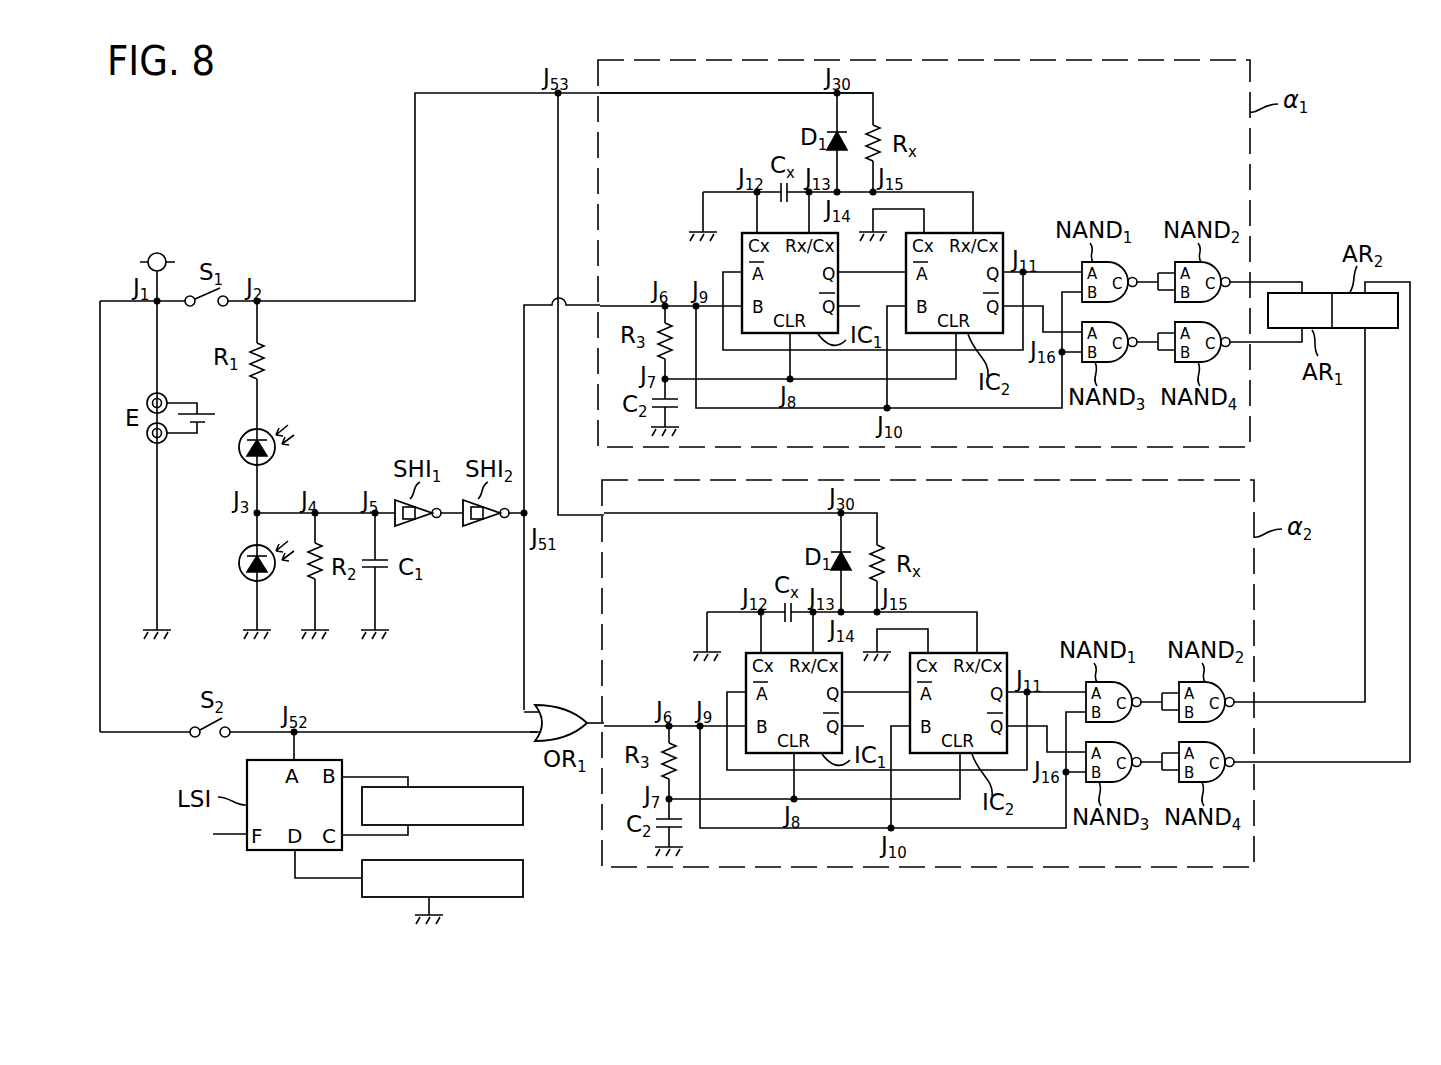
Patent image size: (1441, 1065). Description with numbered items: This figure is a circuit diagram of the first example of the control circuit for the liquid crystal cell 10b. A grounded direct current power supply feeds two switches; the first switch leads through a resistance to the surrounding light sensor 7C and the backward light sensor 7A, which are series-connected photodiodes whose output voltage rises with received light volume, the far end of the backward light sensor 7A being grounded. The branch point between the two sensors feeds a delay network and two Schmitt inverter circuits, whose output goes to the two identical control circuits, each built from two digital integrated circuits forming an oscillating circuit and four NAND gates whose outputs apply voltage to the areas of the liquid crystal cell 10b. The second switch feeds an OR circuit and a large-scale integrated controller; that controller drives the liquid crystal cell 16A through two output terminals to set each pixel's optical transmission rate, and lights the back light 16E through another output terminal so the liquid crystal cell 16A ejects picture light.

The surrounding light sensor 7C is at (274, 428).
The backward light sensor 7A is at (240, 550).
The liquid crystal cell 10b is at (1334, 238).
The liquid crystal cell 16A is at (523, 806).
The back light 16E is at (523, 878).